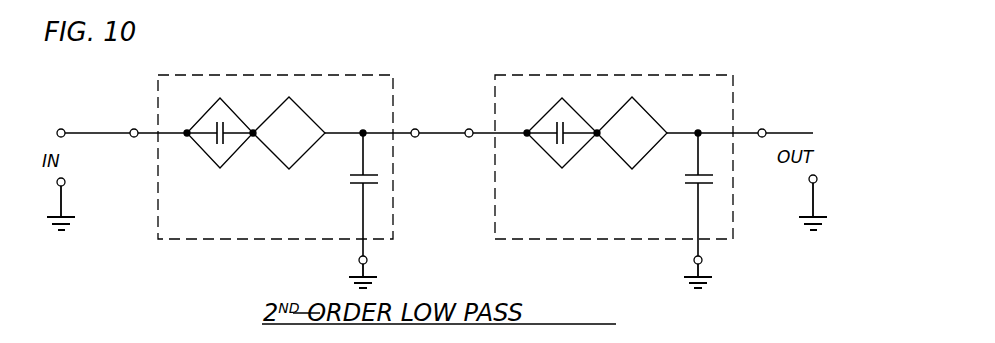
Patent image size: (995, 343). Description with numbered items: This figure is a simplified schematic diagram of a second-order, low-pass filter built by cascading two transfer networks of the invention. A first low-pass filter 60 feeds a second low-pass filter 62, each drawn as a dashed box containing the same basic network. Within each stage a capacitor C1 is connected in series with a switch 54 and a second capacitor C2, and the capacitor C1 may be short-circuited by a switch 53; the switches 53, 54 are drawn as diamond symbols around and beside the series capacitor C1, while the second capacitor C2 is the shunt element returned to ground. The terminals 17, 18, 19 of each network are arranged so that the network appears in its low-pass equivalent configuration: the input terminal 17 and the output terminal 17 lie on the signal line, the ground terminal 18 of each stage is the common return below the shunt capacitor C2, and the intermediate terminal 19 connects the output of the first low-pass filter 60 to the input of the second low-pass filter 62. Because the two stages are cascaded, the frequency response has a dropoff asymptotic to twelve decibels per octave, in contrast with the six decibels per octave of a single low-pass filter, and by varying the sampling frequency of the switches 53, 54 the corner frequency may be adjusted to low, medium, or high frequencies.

The first low-pass filter 60 is at (312, 72).
The second low-pass filter 62 is at (527, 72).
The switch 53 is at (207, 160).
The switch 54 is at (276, 159).
The capacitor C1 is at (219, 120).
The second capacitor C2 is at (688, 180).
The terminal 17 is at (416, 129).
The terminal 18 is at (359, 260).
The terminal 19 is at (469, 137).